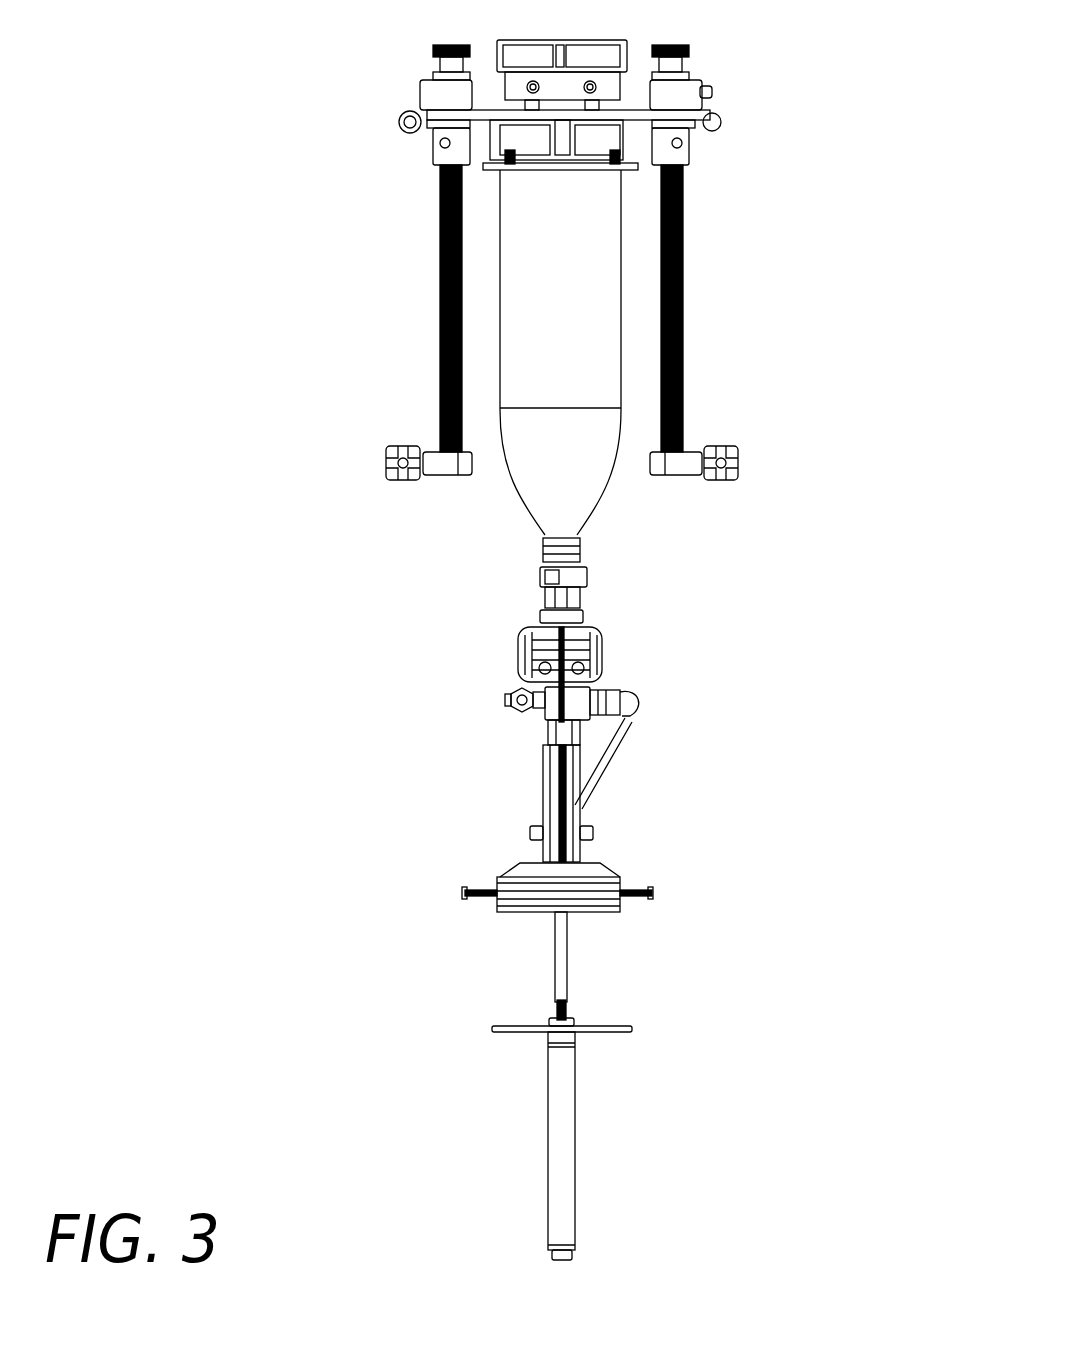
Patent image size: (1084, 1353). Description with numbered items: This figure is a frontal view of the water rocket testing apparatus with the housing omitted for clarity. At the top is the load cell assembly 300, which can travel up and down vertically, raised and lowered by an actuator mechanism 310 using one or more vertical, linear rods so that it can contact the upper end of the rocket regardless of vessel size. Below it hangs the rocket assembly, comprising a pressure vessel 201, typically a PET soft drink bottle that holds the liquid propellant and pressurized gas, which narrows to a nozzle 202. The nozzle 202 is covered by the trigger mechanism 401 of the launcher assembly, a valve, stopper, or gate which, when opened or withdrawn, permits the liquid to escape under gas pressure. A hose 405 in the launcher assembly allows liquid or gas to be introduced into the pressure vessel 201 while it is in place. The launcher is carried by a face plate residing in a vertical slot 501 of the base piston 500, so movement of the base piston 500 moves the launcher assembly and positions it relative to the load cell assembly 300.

The load cell assembly 300 is at (620, 140).
The actuator mechanism 310 is at (440, 228).
The pressure vessel 201 is at (520, 320).
The nozzle 202 is at (593, 575).
The trigger mechanism 401 is at (605, 645).
The hose 405 is at (612, 753).
The vertical slot 501 is at (555, 785).
The base piston 500 is at (555, 950).